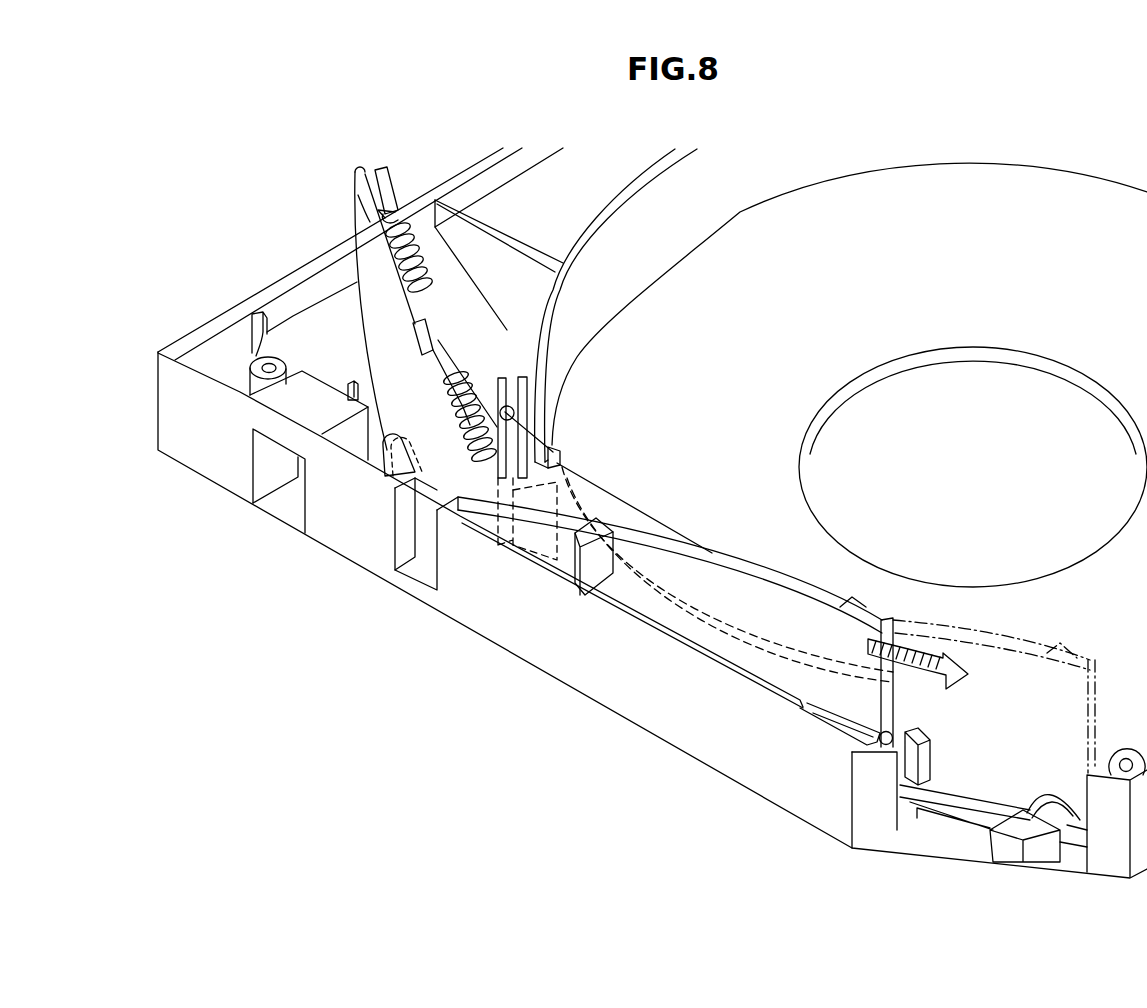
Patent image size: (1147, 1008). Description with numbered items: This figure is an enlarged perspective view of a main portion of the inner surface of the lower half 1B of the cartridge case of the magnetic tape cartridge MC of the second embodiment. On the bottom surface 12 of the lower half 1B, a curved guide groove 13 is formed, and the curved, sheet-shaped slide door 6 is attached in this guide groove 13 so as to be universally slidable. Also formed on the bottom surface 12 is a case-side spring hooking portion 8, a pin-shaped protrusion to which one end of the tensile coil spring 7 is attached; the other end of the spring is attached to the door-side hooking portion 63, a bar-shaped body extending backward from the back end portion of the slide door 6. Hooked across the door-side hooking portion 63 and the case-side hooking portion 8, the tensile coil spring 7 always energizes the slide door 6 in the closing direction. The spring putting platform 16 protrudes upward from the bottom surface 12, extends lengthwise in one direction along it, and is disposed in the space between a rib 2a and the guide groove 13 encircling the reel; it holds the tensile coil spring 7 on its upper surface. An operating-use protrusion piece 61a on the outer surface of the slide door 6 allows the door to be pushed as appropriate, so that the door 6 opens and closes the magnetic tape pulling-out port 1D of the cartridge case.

The magnetic tape cartridge MC is at (222, 282).
The door-side hooking portion 63 is at (384, 171).
The tensile coil spring 7 is at (428, 200).
The bottom surface 12 is at (487, 373).
The spring putting platform 16 is at (527, 387).
The case-side spring hooking portion 8 is at (514, 409).
The rib 2a is at (553, 440).
The slide door 6 is at (740, 583).
The guide groove 13 is at (382, 442).
The operating-use protrusion piece 61a is at (600, 565).
The lower half 1B is at (716, 740).
The pulling-out port 1D is at (900, 827).